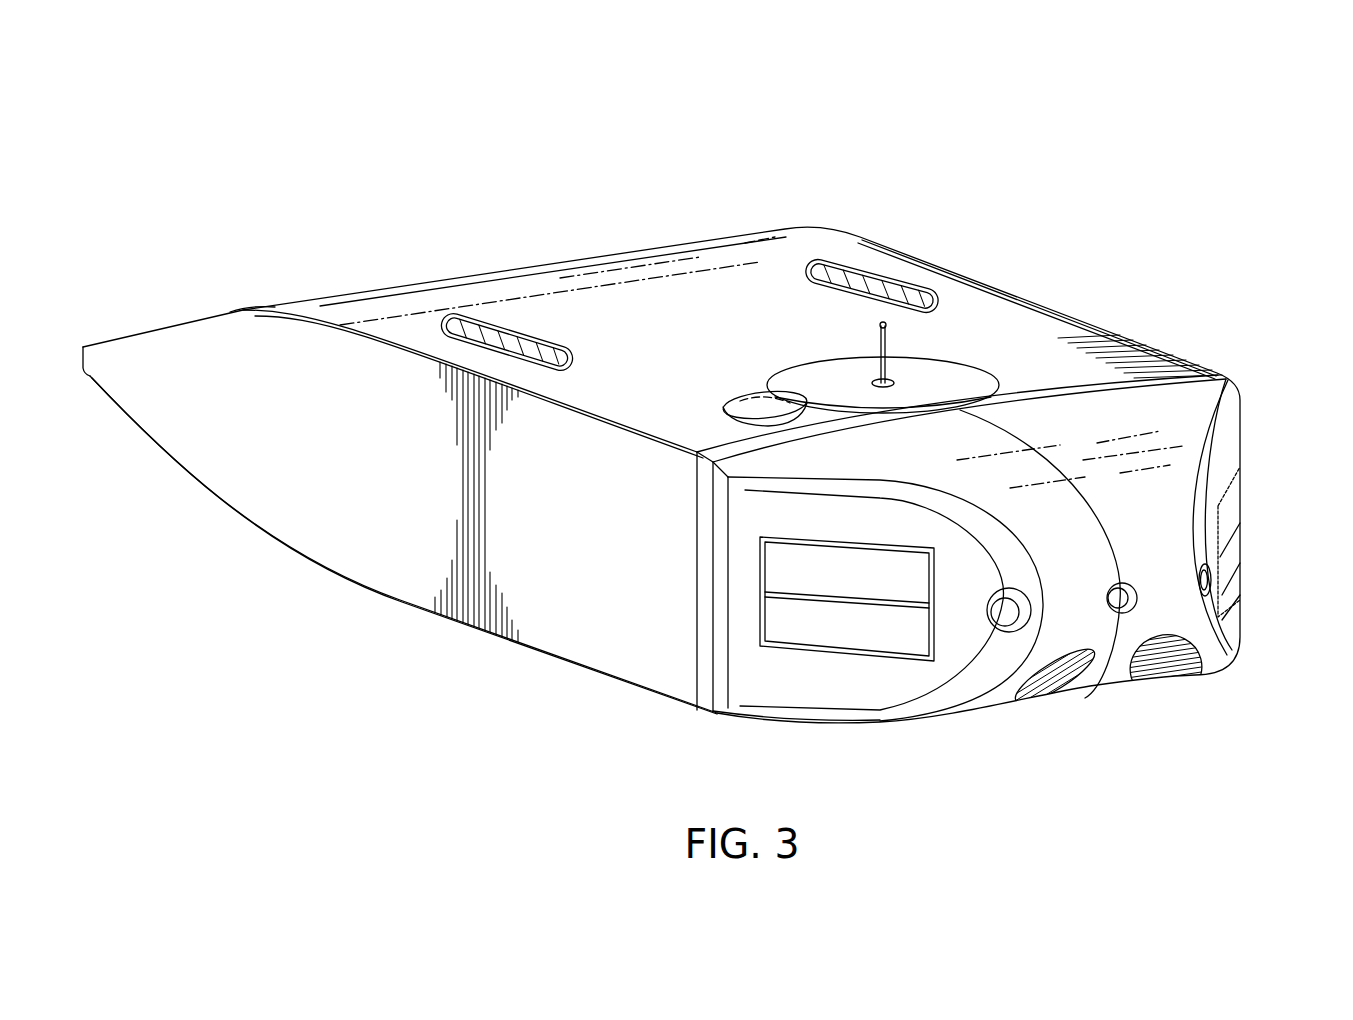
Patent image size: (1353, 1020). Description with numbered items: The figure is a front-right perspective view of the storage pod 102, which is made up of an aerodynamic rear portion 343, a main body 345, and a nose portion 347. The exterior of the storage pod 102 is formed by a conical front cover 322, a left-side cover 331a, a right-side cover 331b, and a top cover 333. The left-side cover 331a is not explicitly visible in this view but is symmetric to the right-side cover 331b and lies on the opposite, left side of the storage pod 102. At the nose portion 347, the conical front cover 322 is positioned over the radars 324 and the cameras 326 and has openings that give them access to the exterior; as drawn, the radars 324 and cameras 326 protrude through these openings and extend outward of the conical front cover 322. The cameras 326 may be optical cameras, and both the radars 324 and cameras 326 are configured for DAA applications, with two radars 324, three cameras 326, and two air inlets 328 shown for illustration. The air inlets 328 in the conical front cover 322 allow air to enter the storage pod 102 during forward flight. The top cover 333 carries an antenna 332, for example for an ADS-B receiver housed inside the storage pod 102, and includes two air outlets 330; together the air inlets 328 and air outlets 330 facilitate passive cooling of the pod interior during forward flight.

The storage pod 102 is at (355, 126).
The conical front cover 322 is at (1237, 438).
The radars 324 is at (822, 627).
The cameras 326 is at (1003, 612).
The air inlets 328 is at (1022, 690).
The air outlets 330 is at (535, 339).
The left-side cover 331a is at (977, 280).
The right-side cover 331b is at (377, 577).
The antenna 332 is at (835, 367).
The top cover 333 is at (413, 330).
The aerodynamic rear portion 343 is at (509, 203).
The main body 345 is at (484, 678).
The nose portion 347 is at (921, 746).